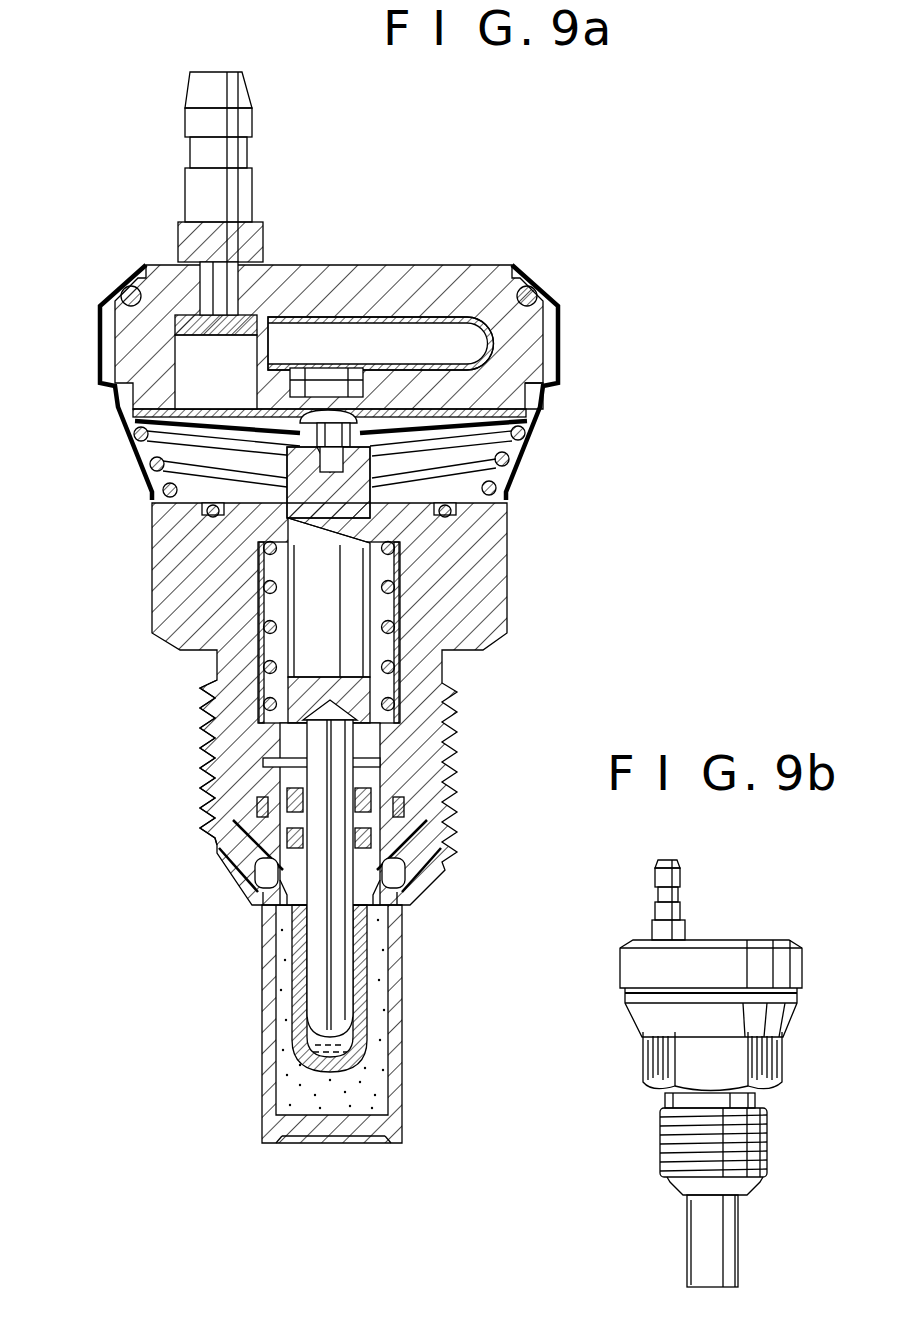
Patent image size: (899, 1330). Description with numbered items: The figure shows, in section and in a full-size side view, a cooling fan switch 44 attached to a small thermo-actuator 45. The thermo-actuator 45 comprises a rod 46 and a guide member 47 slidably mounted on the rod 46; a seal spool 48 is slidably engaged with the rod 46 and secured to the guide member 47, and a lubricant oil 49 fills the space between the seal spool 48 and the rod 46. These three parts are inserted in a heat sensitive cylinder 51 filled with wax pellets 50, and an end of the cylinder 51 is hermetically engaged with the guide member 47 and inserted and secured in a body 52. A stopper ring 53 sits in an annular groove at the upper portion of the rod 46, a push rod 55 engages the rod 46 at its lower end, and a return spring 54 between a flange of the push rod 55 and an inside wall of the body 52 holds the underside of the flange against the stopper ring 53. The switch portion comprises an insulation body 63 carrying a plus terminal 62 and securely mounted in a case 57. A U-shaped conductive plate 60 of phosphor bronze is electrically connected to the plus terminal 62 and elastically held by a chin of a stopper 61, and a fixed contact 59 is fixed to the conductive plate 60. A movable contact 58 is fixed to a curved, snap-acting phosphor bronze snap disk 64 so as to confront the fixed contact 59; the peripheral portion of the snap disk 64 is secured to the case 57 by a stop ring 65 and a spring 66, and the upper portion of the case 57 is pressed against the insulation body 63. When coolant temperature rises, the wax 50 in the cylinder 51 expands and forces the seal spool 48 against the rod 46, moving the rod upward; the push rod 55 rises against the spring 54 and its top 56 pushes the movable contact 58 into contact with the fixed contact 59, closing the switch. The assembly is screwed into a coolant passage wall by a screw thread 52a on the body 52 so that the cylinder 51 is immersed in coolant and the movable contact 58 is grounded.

The cooling fan switch 44 is at (556, 245).
The thermo-actuator 45 is at (242, 973).
The rod 46 is at (340, 955).
The guide member 47 is at (398, 850).
The seal spool 48 is at (272, 908).
The lubricant oil 49 is at (345, 1053).
The wax pellets 50 is at (380, 1020).
The heat sensitive cylinder 51 is at (262, 1068).
The body 52 is at (160, 568).
The screw thread 52a is at (205, 782).
The stopper ring 53 is at (380, 764).
The return spring 54 is at (262, 680).
The push rod 55 is at (305, 607).
The top of the push rod 56 is at (450, 505).
The case 57 is at (560, 330).
The movable contact 58 is at (350, 409).
The fixed contact 59 is at (335, 382).
The conductive plate 60 is at (540, 382).
The stopper 61 is at (258, 352).
The plus terminal 62 is at (238, 96).
The insulation body 63 is at (371, 270).
The snap disk 64 is at (505, 437).
The stop ring 65 is at (127, 408).
The spring 66 is at (140, 462).